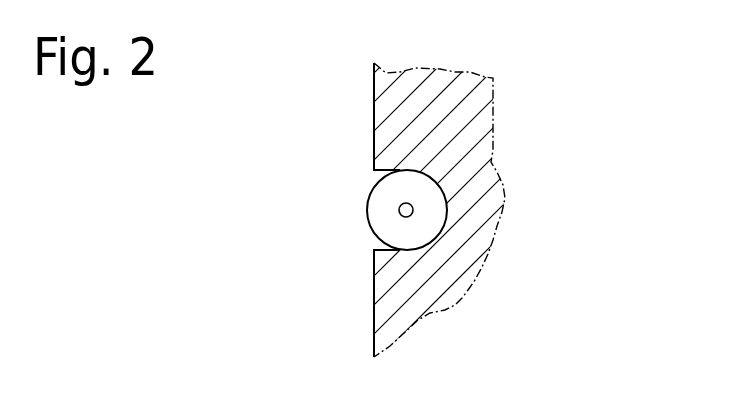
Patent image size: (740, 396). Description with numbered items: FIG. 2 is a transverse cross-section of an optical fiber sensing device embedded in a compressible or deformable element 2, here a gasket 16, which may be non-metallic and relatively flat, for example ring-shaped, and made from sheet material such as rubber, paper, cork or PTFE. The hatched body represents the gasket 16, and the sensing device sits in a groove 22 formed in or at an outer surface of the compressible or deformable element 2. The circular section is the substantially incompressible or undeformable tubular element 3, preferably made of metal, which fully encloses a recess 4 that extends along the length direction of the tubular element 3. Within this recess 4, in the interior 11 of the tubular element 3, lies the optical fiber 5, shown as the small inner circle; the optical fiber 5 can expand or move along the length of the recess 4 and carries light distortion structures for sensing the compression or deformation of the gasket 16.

The compressible or deformable element 2 is at (382, 210).
The gasket 16 is at (478, 172).
The recess 4 is at (351, 210).
The interior 11 is at (378, 209).
The tubular element 3 is at (366, 232).
The optical fiber 5 is at (413, 210).
The groove 22 is at (372, 172).